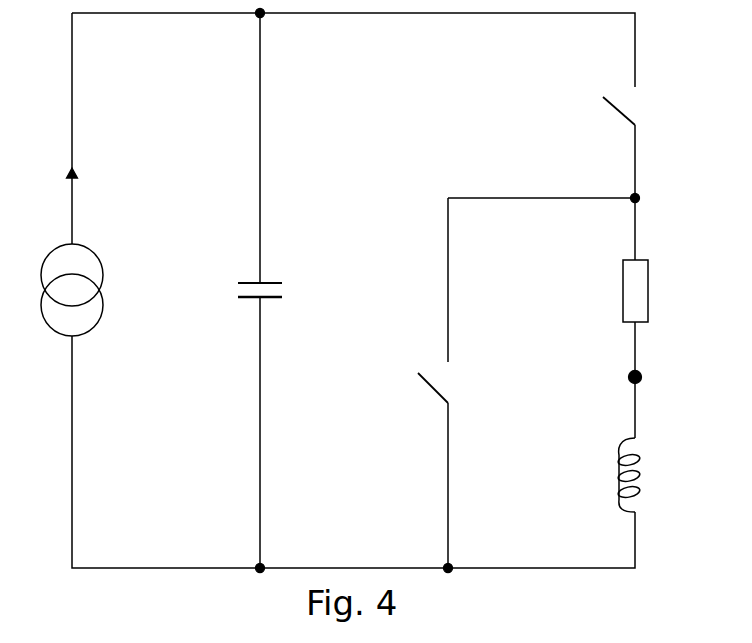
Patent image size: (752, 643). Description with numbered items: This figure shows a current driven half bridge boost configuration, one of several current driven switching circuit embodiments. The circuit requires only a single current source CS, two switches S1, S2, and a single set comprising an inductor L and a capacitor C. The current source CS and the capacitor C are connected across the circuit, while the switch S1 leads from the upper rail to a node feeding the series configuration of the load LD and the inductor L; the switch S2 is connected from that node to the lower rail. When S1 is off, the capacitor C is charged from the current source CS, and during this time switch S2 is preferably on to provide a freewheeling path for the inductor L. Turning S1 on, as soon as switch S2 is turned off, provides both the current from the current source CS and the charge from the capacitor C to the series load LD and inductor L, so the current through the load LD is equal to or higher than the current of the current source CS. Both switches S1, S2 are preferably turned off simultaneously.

The current source CS is at (86, 318).
The capacitor C is at (281, 292).
The switch S1 is at (588, 102).
The switch S2 is at (467, 384).
The load LD is at (636, 292).
The inductor L is at (608, 475).